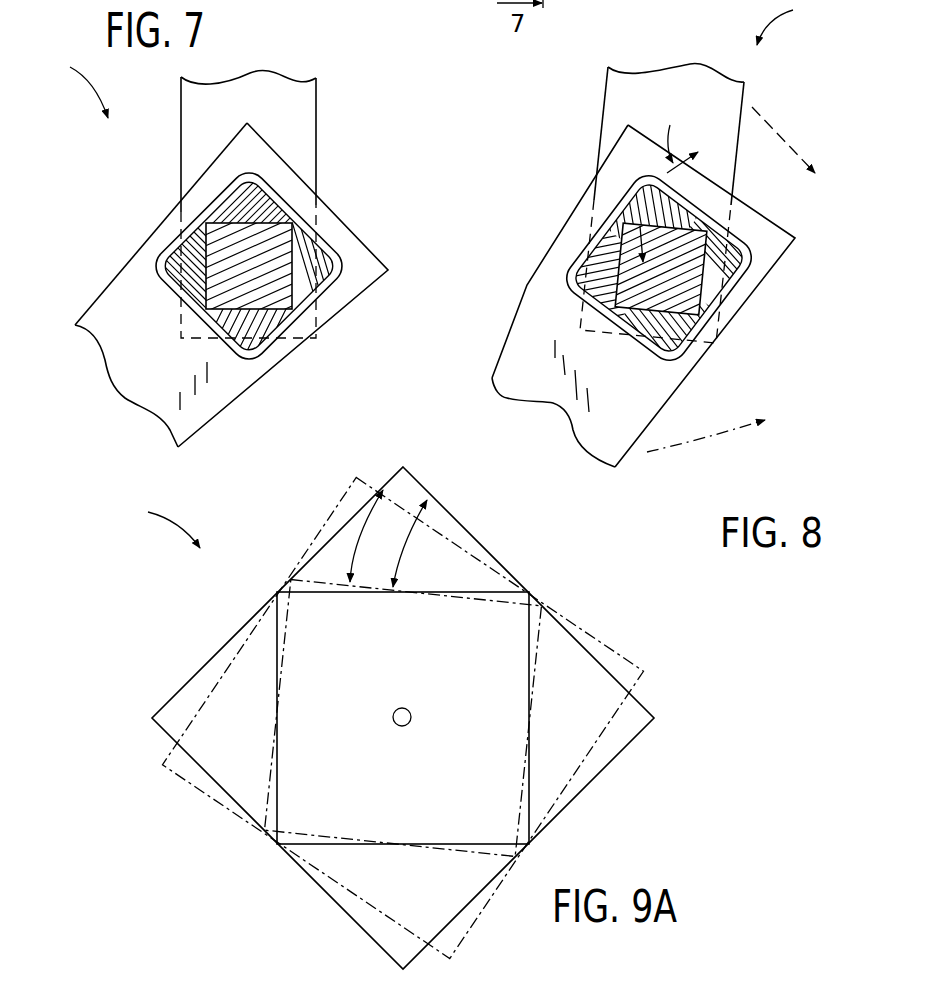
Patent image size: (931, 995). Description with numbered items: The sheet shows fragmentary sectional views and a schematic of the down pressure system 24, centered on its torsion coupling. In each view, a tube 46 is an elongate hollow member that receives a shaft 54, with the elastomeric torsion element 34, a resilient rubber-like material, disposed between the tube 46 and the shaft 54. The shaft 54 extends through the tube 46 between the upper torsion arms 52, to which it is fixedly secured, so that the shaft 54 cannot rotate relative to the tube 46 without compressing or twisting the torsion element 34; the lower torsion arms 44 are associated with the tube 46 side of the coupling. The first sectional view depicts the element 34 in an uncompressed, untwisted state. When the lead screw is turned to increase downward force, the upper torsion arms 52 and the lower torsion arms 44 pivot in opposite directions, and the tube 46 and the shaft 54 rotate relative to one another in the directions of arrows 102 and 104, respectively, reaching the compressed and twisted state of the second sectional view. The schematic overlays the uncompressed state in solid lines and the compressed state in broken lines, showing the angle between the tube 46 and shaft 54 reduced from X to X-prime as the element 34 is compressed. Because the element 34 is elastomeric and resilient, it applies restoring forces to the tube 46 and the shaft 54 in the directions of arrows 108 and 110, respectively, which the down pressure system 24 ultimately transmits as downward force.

In FIG. 7, the down pressure system 24 is at (75, 83).
In FIG. 8, the down pressure system 24 is at (791, 22).
In FIG. 9A, the down pressure system 24 is at (152, 520).
In FIG. 7, the elastomeric torsion element 34 is at (237, 197).
In FIG. 8, the elastomeric torsion element 34 is at (638, 203).
In FIG. 9A, the elastomeric torsion element 34 is at (467, 568).
In FIG. 7, the lower torsion arms 44 is at (220, 425).
In FIG. 8, the lower torsion arms 44 is at (505, 333).
In FIG. 7, the tube 46 is at (337, 247).
In FIG. 8, the tube 46 is at (785, 228).
In FIG. 9A, the tube 46 is at (465, 520).
In FIG. 7, the upper torsion arms 52 is at (307, 123).
In FIG. 8, the upper torsion arms 52 is at (602, 118).
In FIG. 7, the shaft 54 is at (282, 222).
In FIG. 8, the shaft 54 is at (712, 225).
In FIG. 9A, the shaft 54 is at (393, 653).
In FIG. 8, the arrow 102 is at (673, 450).
In FIG. 8, the arrow 104 is at (800, 150).
In FIG. 8, the arrow 108 is at (677, 134).
In FIG. 8, the arrow 110 is at (633, 243).